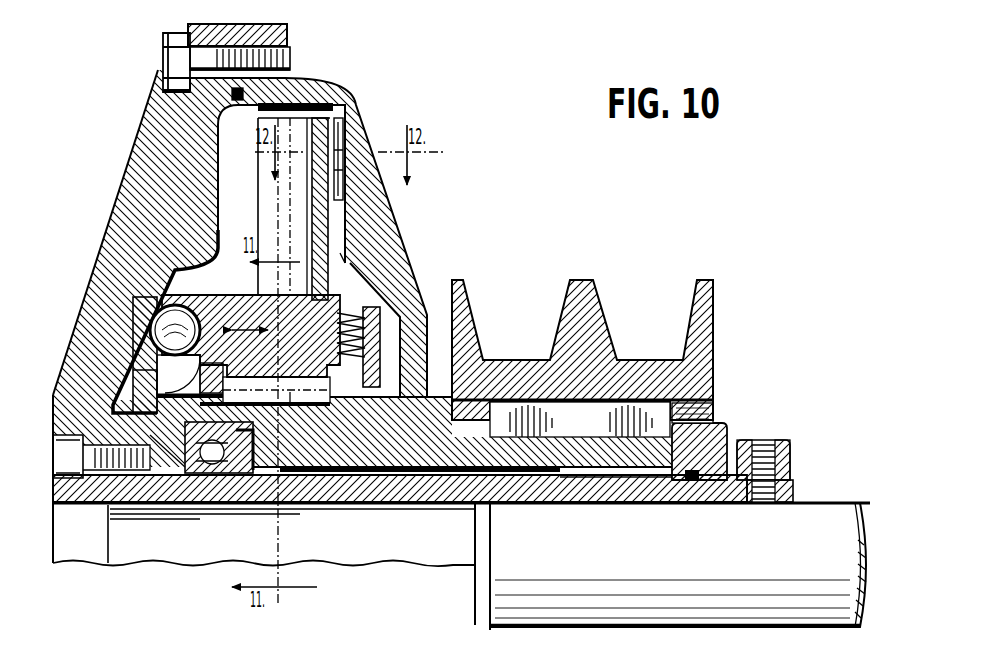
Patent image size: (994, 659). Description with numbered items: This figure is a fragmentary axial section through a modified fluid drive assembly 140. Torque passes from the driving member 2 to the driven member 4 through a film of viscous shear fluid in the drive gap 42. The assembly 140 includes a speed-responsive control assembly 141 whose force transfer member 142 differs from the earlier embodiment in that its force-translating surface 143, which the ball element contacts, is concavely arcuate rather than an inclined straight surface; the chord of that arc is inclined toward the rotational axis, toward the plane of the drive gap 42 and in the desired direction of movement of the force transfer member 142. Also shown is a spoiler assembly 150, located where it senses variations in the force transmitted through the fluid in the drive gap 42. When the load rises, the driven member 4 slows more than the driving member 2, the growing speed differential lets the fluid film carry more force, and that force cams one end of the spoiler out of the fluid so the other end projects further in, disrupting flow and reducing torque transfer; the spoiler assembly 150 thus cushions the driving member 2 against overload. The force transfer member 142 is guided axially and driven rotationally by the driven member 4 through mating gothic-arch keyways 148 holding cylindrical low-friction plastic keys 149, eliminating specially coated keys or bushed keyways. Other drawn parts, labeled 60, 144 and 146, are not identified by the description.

The driving member 2 is at (812, 487).
The driven member 4 is at (735, 422).
The drive gap 42 is at (340, 98).
The detent ball 60 is at (166, 320).
The fluid drive assembly 140 is at (464, 242).
The speed-responsive control assembly 141 is at (266, 236).
The force transfer member 142 is at (316, 213).
The force-translating surface 143 is at (225, 296).
The detent block 144 is at (135, 368).
The detent plunger 146 is at (147, 376).
The keyways 148 is at (342, 378).
The keys 149 is at (291, 394).
The spoiler assembly 150 is at (355, 138).